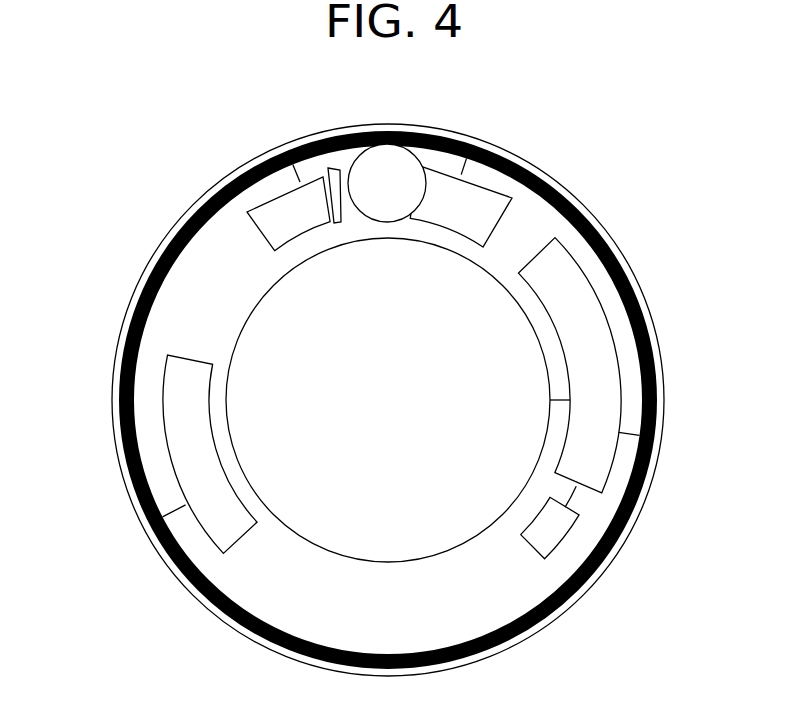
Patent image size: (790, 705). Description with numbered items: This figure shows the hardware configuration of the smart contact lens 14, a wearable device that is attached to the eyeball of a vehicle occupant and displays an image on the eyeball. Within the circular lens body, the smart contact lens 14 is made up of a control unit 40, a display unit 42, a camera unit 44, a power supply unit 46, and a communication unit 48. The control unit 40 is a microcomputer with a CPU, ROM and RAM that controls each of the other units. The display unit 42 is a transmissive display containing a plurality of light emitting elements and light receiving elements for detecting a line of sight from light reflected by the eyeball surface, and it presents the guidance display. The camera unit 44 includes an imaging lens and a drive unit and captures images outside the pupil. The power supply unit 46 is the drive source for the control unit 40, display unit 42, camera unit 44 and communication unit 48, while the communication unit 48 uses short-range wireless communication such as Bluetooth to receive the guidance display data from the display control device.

The smart contact lens 14 is at (670, 123).
The control unit 40 is at (602, 375).
The display unit 42 is at (273, 343).
The camera unit 44 is at (413, 163).
The power supply unit 46 is at (283, 217).
The communication unit 48 is at (182, 428).